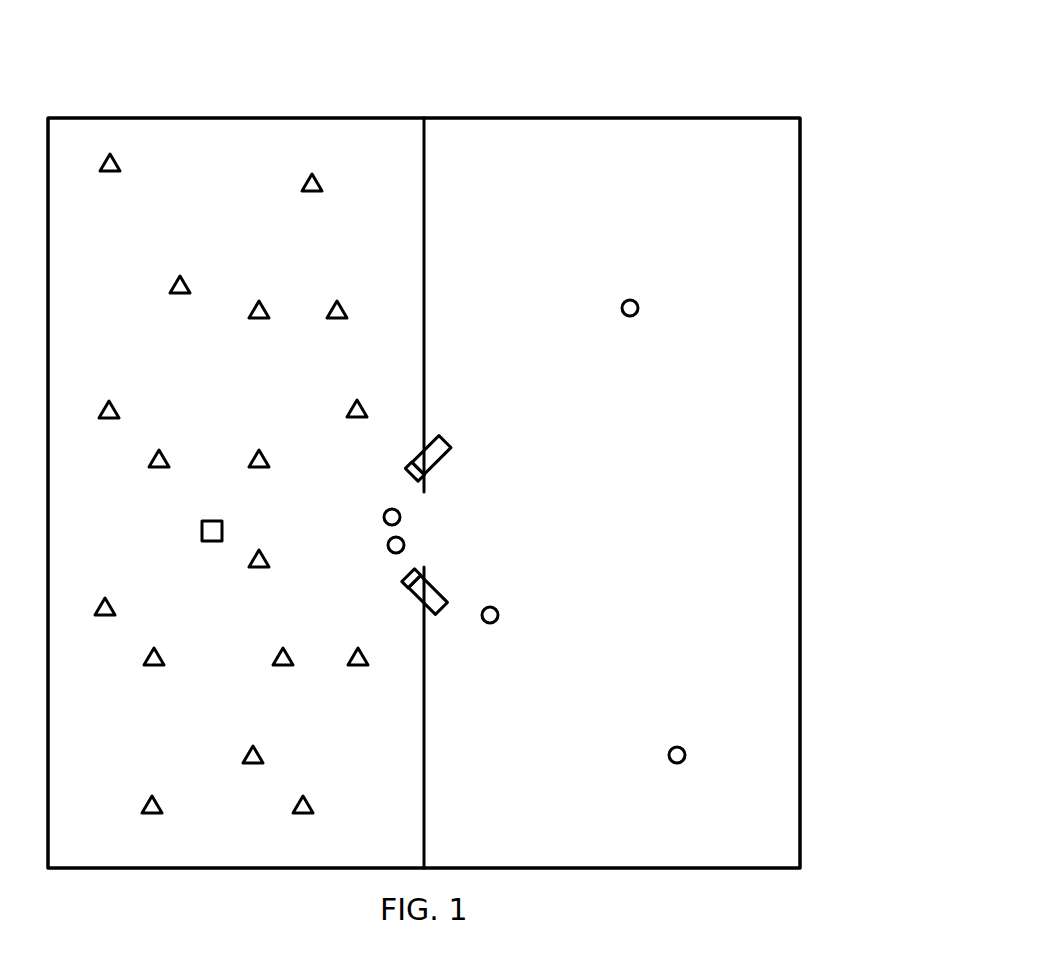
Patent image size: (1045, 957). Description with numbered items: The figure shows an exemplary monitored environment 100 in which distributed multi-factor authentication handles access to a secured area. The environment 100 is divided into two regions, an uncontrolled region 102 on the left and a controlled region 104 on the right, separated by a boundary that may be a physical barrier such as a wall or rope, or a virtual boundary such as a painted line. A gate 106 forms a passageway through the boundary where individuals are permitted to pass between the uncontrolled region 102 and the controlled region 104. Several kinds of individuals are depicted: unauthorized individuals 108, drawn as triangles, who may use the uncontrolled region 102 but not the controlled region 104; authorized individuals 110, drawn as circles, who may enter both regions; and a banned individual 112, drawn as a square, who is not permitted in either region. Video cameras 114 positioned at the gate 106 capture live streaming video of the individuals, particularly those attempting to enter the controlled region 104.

The monitored environment 100 is at (800, 152).
The uncontrolled region 102 is at (233, 118).
The controlled region 104 is at (608, 118).
The gate 106 is at (423, 500).
The unauthorized individuals 108 is at (305, 189).
The authorized individuals 110 is at (622, 310).
The banned individual 112 is at (202, 532).
The video cameras 114 is at (447, 445).